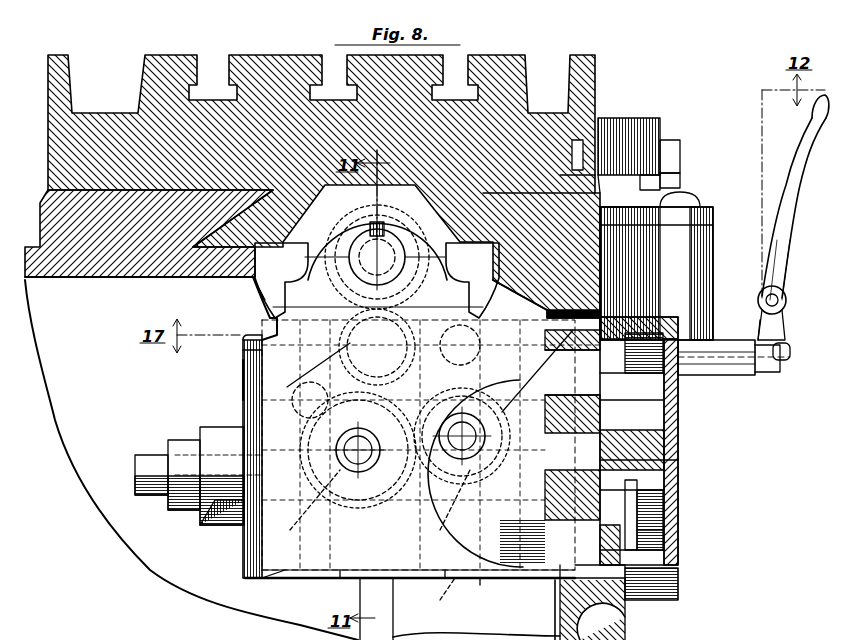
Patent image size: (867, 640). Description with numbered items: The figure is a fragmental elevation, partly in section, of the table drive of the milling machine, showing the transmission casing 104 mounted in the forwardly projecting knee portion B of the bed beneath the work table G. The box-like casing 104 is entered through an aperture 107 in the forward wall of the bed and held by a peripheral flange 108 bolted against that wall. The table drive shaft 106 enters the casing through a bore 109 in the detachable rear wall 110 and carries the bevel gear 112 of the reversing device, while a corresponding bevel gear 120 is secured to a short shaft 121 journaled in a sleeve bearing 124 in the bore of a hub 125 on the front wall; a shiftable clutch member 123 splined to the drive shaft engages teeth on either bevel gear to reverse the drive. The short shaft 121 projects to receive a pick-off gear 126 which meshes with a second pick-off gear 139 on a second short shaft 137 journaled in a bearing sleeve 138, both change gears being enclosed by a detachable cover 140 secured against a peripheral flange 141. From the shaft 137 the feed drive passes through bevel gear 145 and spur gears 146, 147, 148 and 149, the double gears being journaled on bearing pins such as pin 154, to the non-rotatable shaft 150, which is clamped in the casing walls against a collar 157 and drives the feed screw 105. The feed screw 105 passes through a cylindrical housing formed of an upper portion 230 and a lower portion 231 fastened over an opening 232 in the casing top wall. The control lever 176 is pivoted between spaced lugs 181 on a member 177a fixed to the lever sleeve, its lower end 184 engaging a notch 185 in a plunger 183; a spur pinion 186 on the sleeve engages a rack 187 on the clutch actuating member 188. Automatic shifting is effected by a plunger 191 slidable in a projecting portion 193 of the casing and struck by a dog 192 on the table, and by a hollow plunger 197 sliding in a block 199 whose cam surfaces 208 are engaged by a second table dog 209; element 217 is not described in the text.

The work support or table G is at (500, 58).
The knee portion of bed B is at (80, 437).
The feed screw 105 is at (376, 220).
The lower portion of housing 231 is at (306, 266).
The clutch actuating member 188 is at (448, 270).
The opening in casing top wall 232 is at (268, 336).
The upper portion of housing 230 is at (226, 278).
The spur gear 148 is at (365, 490).
The shiftable clutch member 123 is at (400, 528).
The bearing pin 154 is at (335, 530).
The bevel gear 120 is at (478, 525).
The non-rotatable shaft 150 is at (287, 387).
The table drive shaft 106 is at (155, 450).
The bore 109 is at (216, 440).
The detachable rear wall 110 is at (243, 380).
The spur gear 149 is at (243, 350).
The rack 187 is at (540, 292).
The spur pinion 186 is at (516, 296).
The second short shaft 137 is at (572, 425).
The collar 157 is at (483, 473).
The short shaft 121 is at (528, 530).
The hub 125 is at (600, 538).
The second pick-off gear 139 is at (680, 424).
The bearing sleeve 138 is at (678, 460).
The pick-off gear 126 is at (672, 512).
The sleeve bearing 124 is at (668, 532).
The detachable cover 140 is at (678, 549).
The peripheral flange 141 is at (680, 578).
The peripheral flange 108 is at (606, 622).
The aperture 107 is at (560, 604).
The block 199 is at (713, 232).
The projecting portion of casing 193 is at (705, 216).
The cam surfaces 208 is at (686, 196).
The hollow plunger 197 is at (700, 205).
The pin 217 is at (615, 150).
The dog 192 is at (664, 140).
The dog 209 is at (668, 168).
The plunger 191 is at (690, 166).
The member 177a is at (714, 388).
The plunger 183 is at (760, 368).
The notch 185 is at (788, 343).
The lower end of lever 184 is at (786, 301).
The lever 176 is at (782, 224).
The spaced lugs 181 is at (755, 318).
The bevel gear 112 is at (290, 578).
The spur gear 147 is at (345, 578).
The bevel gear 145 is at (445, 578).
The spur gear 146 is at (452, 600).
The transmission casing 104 is at (480, 585).